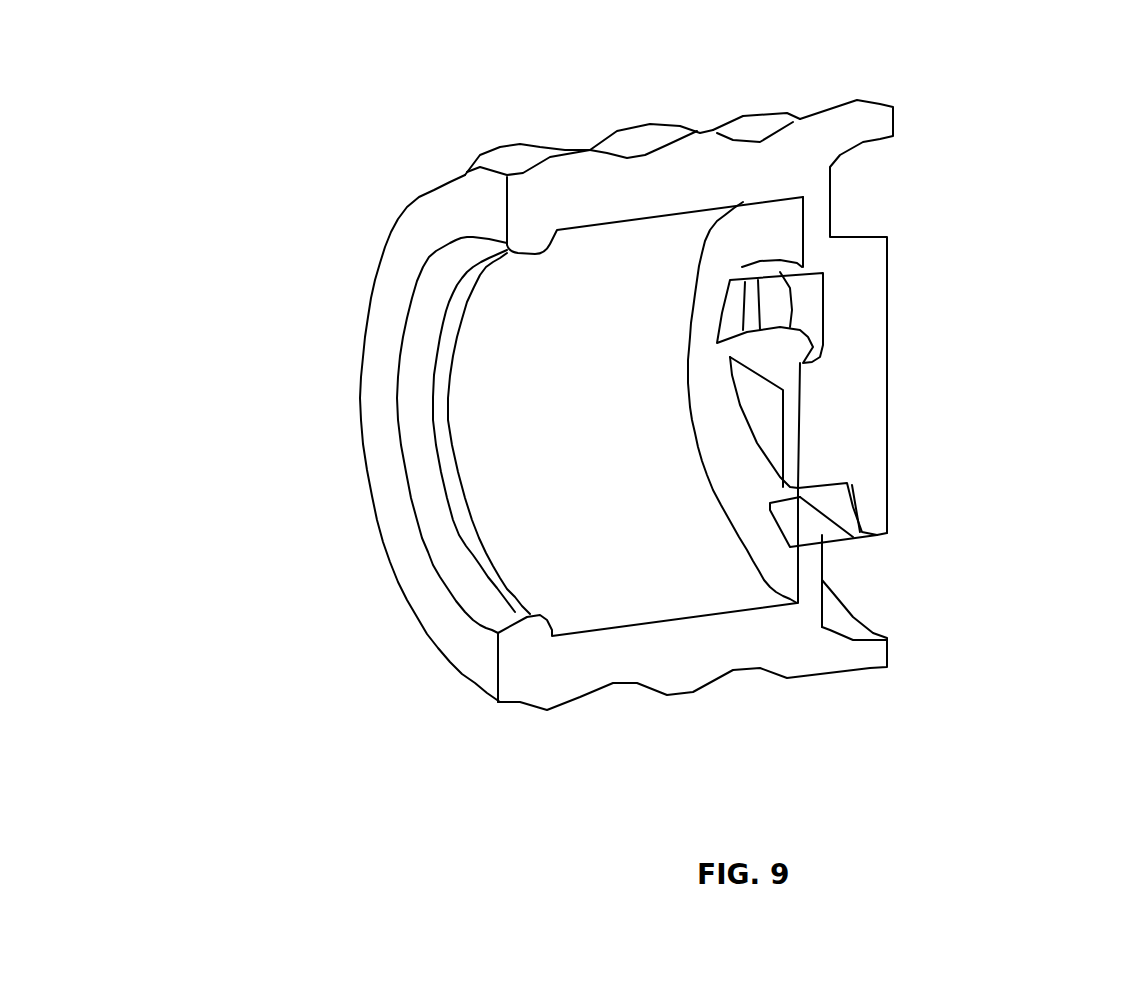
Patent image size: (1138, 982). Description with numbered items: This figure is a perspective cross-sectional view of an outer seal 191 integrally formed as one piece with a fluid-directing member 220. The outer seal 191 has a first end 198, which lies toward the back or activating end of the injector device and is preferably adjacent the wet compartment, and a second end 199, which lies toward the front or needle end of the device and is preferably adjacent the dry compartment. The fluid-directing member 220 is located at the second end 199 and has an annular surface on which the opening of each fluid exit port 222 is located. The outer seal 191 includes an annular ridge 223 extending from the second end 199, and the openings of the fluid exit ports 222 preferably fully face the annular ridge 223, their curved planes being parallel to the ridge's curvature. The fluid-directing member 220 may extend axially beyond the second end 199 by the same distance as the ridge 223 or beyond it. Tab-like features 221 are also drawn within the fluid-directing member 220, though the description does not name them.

The outer seal 191 is at (703, 109).
The first end 198 is at (320, 390).
The second end 199 is at (920, 418).
The fluid-directing member 220 is at (858, 377).
The retaining tabs 221 is at (803, 313).
The fluid exit port 222 is at (779, 302).
The annular ridge 223 is at (889, 675).